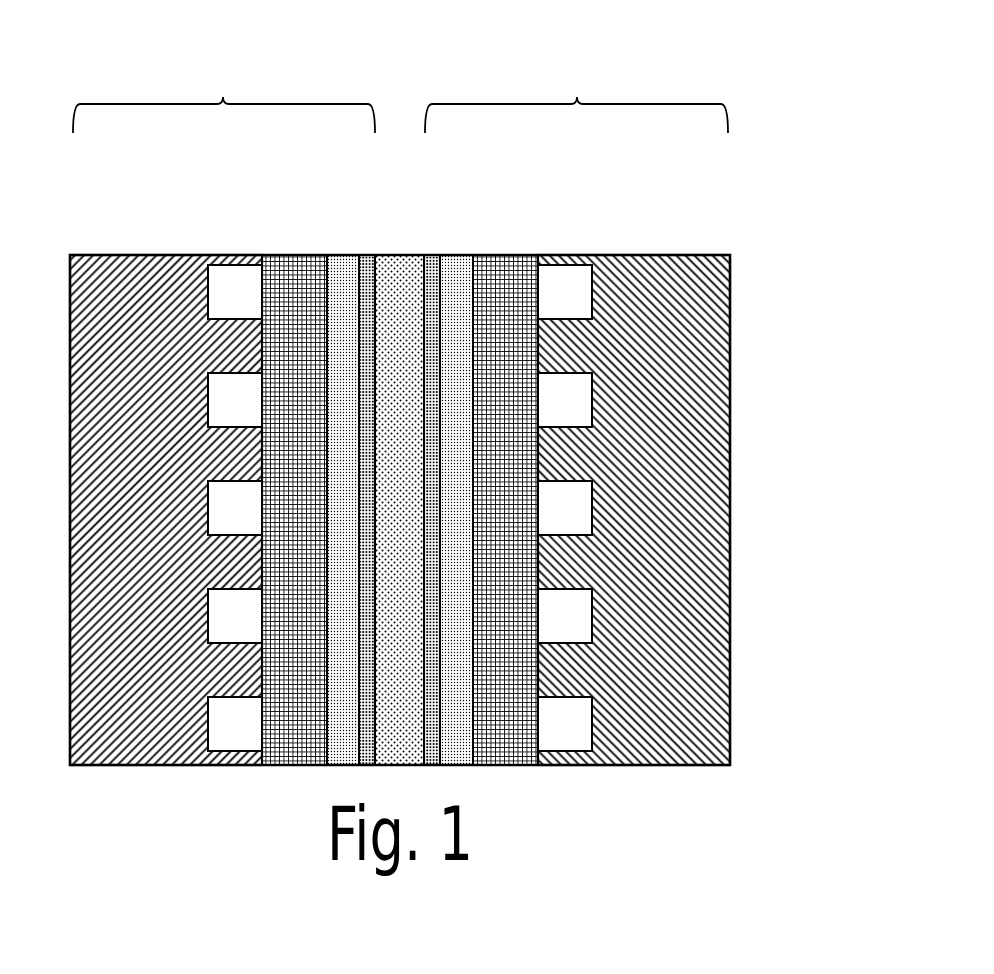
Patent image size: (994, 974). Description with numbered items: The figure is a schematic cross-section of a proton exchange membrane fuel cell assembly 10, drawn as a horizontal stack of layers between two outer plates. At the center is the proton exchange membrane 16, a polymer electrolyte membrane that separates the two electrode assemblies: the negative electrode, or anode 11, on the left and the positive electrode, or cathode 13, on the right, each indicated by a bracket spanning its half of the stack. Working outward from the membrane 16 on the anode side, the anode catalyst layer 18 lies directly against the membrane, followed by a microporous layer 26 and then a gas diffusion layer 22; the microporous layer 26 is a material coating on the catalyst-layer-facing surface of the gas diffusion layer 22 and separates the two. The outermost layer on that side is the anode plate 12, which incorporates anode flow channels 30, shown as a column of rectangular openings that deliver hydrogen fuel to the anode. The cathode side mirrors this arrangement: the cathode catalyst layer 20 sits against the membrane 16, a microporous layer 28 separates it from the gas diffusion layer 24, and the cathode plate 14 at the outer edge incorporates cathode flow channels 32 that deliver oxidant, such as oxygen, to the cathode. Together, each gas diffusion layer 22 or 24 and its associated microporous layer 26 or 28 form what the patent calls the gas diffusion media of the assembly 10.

The proton exchange membrane fuel cell assembly 10 is at (758, 254).
The anode 11 is at (224, 98).
The anode plate 12 is at (136, 266).
The cathode 13 is at (577, 98).
The cathode plate 14 is at (651, 262).
The proton exchange membrane 16 is at (401, 258).
The anode catalyst layer 18 is at (370, 256).
The cathode catalyst layer 20 is at (433, 256).
The gas diffusion layer 22 is at (294, 256).
The gas diffusion layer 24 is at (507, 256).
The microporous layer 26 is at (343, 256).
The microporous layer 28 is at (457, 256).
The anode flow channels 30 is at (234, 513).
The cathode flow channels 32 is at (568, 403).